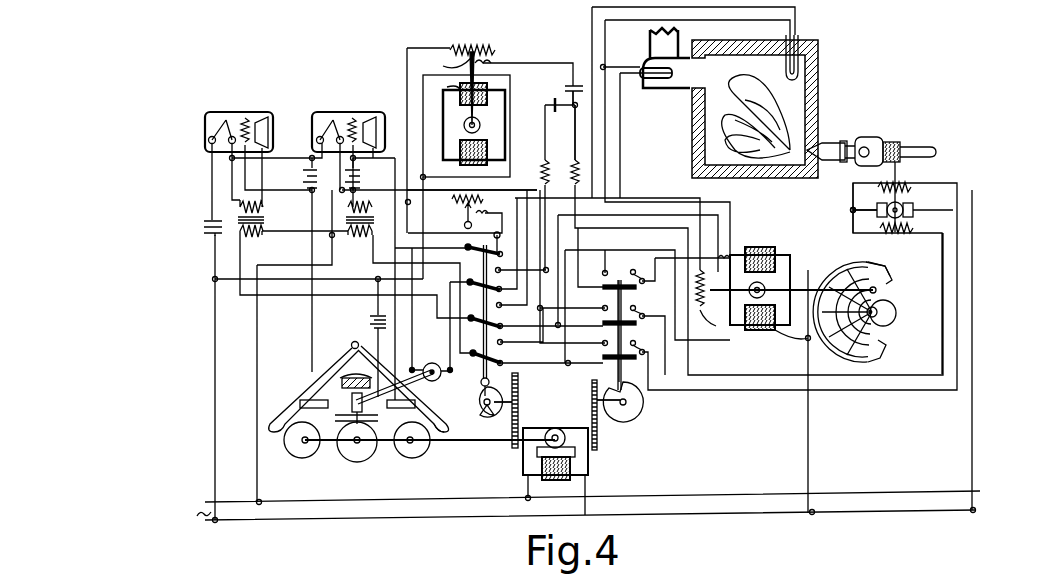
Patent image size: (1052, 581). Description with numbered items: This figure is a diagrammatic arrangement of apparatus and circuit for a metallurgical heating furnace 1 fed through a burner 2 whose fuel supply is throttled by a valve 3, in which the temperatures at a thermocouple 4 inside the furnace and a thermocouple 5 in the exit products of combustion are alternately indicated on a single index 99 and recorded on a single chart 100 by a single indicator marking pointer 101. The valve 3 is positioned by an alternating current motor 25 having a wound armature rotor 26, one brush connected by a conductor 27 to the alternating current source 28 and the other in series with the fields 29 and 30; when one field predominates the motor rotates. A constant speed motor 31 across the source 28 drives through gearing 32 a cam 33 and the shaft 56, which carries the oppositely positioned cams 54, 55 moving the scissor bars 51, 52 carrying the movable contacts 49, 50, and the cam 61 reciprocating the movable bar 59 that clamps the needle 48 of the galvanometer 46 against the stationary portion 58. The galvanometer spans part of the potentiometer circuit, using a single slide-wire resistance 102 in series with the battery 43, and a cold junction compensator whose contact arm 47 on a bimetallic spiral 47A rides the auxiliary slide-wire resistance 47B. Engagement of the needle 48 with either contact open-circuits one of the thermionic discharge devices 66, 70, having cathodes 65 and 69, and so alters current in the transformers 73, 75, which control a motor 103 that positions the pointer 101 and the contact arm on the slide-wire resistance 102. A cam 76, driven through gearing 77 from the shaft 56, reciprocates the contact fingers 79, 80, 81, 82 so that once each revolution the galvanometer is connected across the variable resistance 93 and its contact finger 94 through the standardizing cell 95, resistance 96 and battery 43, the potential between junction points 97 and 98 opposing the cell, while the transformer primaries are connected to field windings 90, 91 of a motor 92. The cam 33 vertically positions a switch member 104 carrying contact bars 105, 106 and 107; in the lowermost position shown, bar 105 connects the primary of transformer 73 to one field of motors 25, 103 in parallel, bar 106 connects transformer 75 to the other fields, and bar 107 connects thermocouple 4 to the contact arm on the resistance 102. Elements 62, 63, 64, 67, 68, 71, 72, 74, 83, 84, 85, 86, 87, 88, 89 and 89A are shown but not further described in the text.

The heating furnace 1 is at (818, 96).
The burner 2 is at (825, 144).
The valve 3 is at (862, 137).
The thermocouple 4 is at (786, 70).
The thermocouple 5 is at (672, 74).
The alternating current motor 25 is at (851, 211).
The wound armature rotor 26 is at (913, 205).
The conductor 27 is at (972, 196).
The alternating current source 28 is at (699, 496).
The field 29 is at (908, 187).
The field 30 is at (919, 224).
The constant speed alternating current motor 31 is at (588, 465).
The gearing 32 is at (590, 396).
The cam 33 is at (643, 405).
The battery 43 is at (578, 84).
The galvanometer 46 is at (442, 363).
The contact arm 47 is at (467, 209).
The bimetallic spiral 47A is at (451, 231).
The auxiliary slide-wire resistance 47B is at (466, 165).
The galvanometer needle 48 is at (352, 406).
The movable contact 49 is at (300, 405).
The movable contact 50 is at (426, 410).
The scissor bar 51 is at (302, 398).
The scissor bar 52 is at (415, 402).
The cam 54 is at (294, 455).
The cam 55 is at (410, 456).
The shaft 56 is at (504, 443).
The stationary portion 58 is at (356, 372).
The movable bar 59 is at (378, 416).
The cam 61 is at (360, 462).
The condenser 62 is at (370, 316).
The condenser 63 is at (345, 173).
The relay coil 64 is at (368, 104).
The cathode 65 is at (333, 103).
The thermionic discharge device 66 is at (312, 137).
The condenser 67 is at (303, 178).
The relay coil 68 is at (249, 104).
The cathode 69 is at (217, 114).
The thermionic discharge device 70 is at (273, 124).
The condenser 71 is at (204, 220).
The relay armature 72 is at (373, 117).
The transformer 73 is at (368, 218).
The relay armature 74 is at (264, 117).
The transformer 75 is at (263, 218).
The cam 76 is at (478, 413).
The gearing 77 is at (520, 380).
The contact finger 79 is at (478, 363).
The contact finger 80 is at (481, 329).
The contact finger 81 is at (480, 294).
The contact finger 82 is at (479, 315).
The contact 83 is at (501, 353).
The contact 84 is at (501, 333).
The contact 85 is at (501, 315).
The contact 86 is at (500, 297).
The contact 87 is at (500, 280).
The contact 88 is at (500, 262).
The contact 89 is at (495, 249).
The contact 89A is at (491, 230).
The field winding 90 is at (474, 106).
The field winding 91 is at (482, 165).
The motor 92 is at (443, 116).
The variable resistance 93 is at (490, 57).
The contact finger 94 is at (445, 64).
The standardizing cell 95 is at (555, 98).
The resistance 96 is at (546, 162).
The junction point 97 is at (575, 112).
The junction point 98 is at (410, 203).
The index 99 is at (888, 270).
The chart 100 is at (892, 298).
The indicator marking pointer 101 is at (802, 288).
The slide-wire resistance 102 is at (707, 299).
The motor 103 is at (775, 249).
The switch member 104 is at (621, 368).
The contact bar 105 is at (603, 356).
The contact bar 106 is at (603, 322).
The contact bar 107 is at (603, 288).